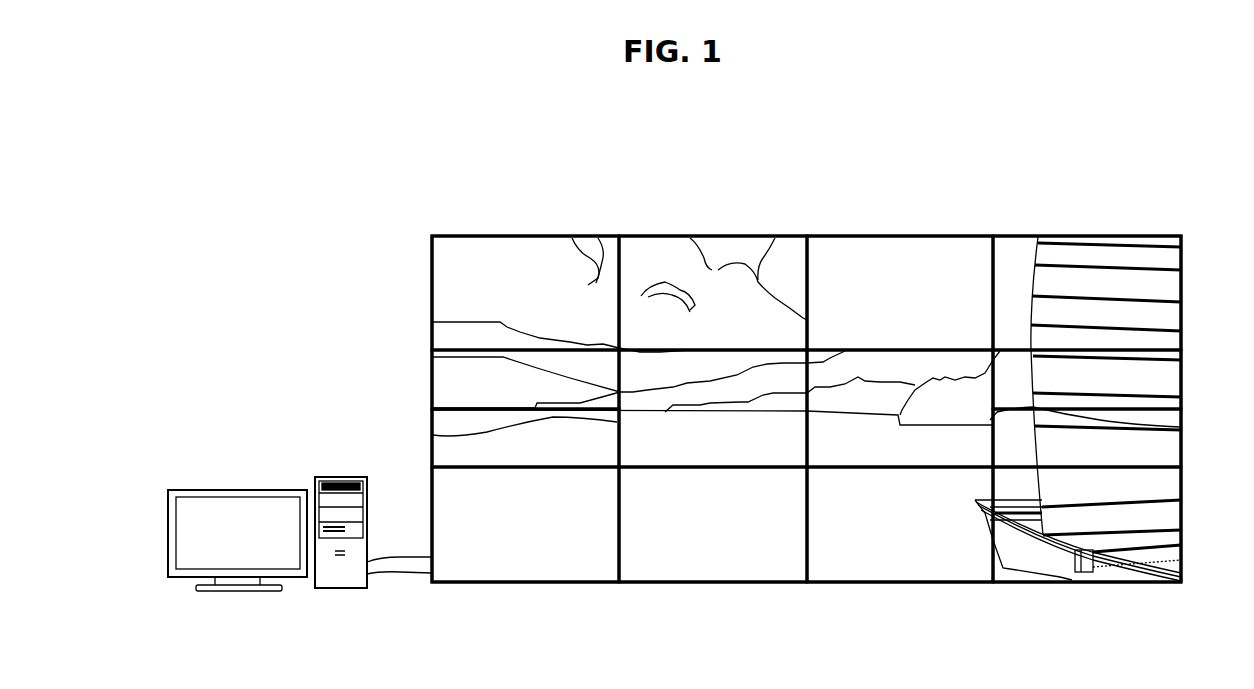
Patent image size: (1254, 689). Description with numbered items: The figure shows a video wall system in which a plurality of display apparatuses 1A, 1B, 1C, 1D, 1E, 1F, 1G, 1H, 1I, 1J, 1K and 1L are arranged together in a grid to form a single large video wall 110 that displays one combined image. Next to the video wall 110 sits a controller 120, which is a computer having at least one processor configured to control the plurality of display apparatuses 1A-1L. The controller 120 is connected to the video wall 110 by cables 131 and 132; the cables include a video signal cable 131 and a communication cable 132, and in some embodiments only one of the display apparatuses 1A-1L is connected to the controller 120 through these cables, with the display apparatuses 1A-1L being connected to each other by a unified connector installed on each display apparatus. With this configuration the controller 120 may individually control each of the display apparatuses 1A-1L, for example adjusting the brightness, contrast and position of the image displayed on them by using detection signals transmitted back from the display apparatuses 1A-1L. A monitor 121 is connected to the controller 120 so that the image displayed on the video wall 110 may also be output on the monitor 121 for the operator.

The video wall 110 is at (472, 228).
The display apparatus 1A is at (545, 234).
The display apparatus 1B is at (432, 357).
The display apparatus 1C is at (556, 584).
The display apparatus 1D is at (736, 584).
The display apparatus 1E is at (432, 437).
The display apparatus 1F is at (722, 234).
The display apparatus 1G is at (907, 234).
The display apparatus 1H is at (1182, 428).
The display apparatus 1I is at (920, 584).
The display apparatus 1J is at (1131, 584).
The display apparatus 1K is at (1182, 370).
The display apparatus 1L is at (1118, 234).
The controller 120 is at (337, 464).
The monitor 121 is at (190, 490).
The video signal cable 131 is at (406, 554).
The communication cable 132 is at (407, 575).